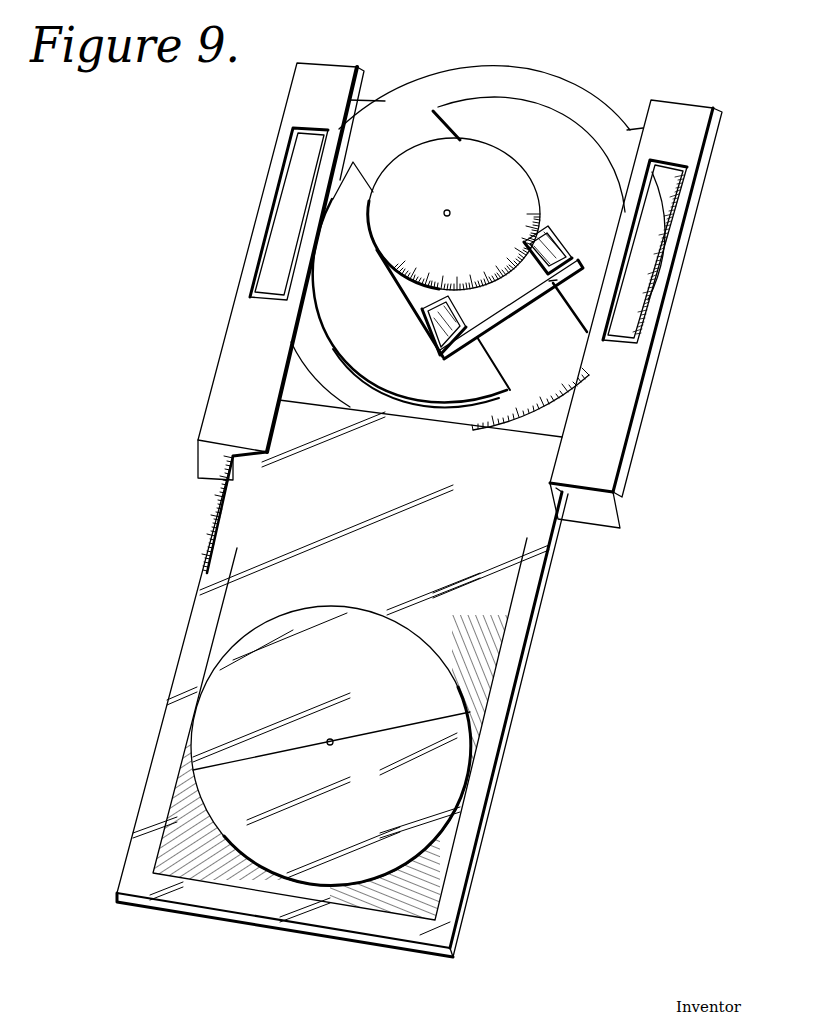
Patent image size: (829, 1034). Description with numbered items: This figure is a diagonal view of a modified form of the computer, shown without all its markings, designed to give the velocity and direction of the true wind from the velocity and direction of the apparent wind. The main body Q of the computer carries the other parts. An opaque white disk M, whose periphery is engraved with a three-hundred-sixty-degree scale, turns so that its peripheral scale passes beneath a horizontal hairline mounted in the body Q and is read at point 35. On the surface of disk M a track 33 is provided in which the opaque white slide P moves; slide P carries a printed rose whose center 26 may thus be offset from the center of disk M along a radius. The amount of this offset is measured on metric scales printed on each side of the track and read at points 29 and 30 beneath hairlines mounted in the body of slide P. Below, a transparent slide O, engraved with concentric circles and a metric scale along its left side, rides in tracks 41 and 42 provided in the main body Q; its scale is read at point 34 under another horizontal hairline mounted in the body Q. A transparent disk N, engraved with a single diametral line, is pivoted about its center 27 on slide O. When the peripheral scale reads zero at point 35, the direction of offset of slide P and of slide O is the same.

The disk M is at (588, 78).
The slide P is at (493, 143).
The body Q is at (630, 423).
The slide O is at (540, 587).
The disk N is at (471, 727).
The center of rose 26 is at (450, 211).
The center of disk N 27 is at (333, 741).
The reading point 29 is at (422, 325).
The reading point 30 is at (552, 240).
The track 33 is at (560, 320).
The reading point 34 is at (305, 222).
The reading point 35 is at (657, 254).
The track 41 is at (247, 470).
The track 42 is at (553, 497).